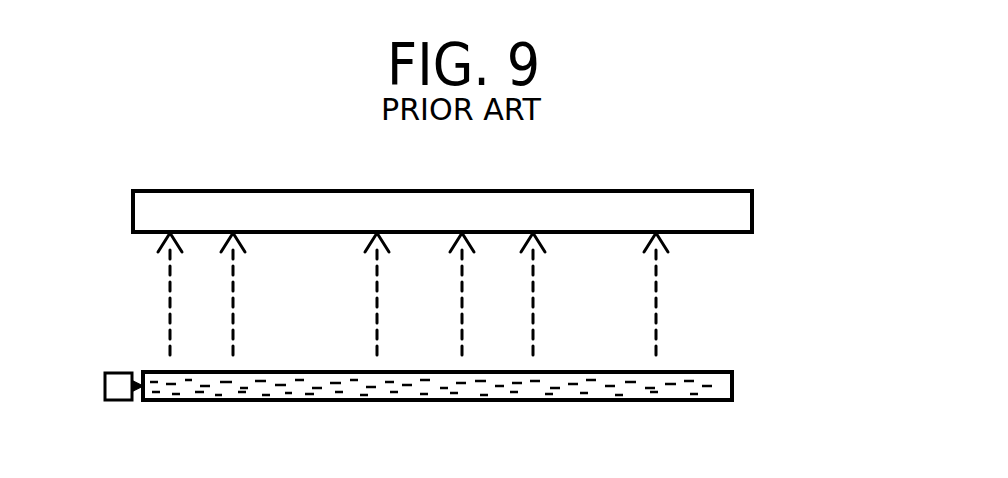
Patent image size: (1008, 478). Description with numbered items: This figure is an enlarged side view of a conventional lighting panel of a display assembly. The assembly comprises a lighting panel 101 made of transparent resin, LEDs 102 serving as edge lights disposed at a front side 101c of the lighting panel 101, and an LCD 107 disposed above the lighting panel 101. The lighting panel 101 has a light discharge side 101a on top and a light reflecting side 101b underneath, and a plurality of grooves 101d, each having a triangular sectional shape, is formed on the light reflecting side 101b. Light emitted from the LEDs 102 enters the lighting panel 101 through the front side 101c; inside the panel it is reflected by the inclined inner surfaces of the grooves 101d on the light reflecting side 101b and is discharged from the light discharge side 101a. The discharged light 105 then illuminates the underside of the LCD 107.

The LCD 107 is at (752, 202).
The discharged light 105 is at (462, 283).
The lighting panel 101 is at (732, 378).
The light discharge side 101a is at (702, 372).
The light reflecting side 101b is at (410, 400).
The front side 101c is at (128, 400).
The grooves 101d is at (272, 400).
The LEDs 102 is at (118, 373).